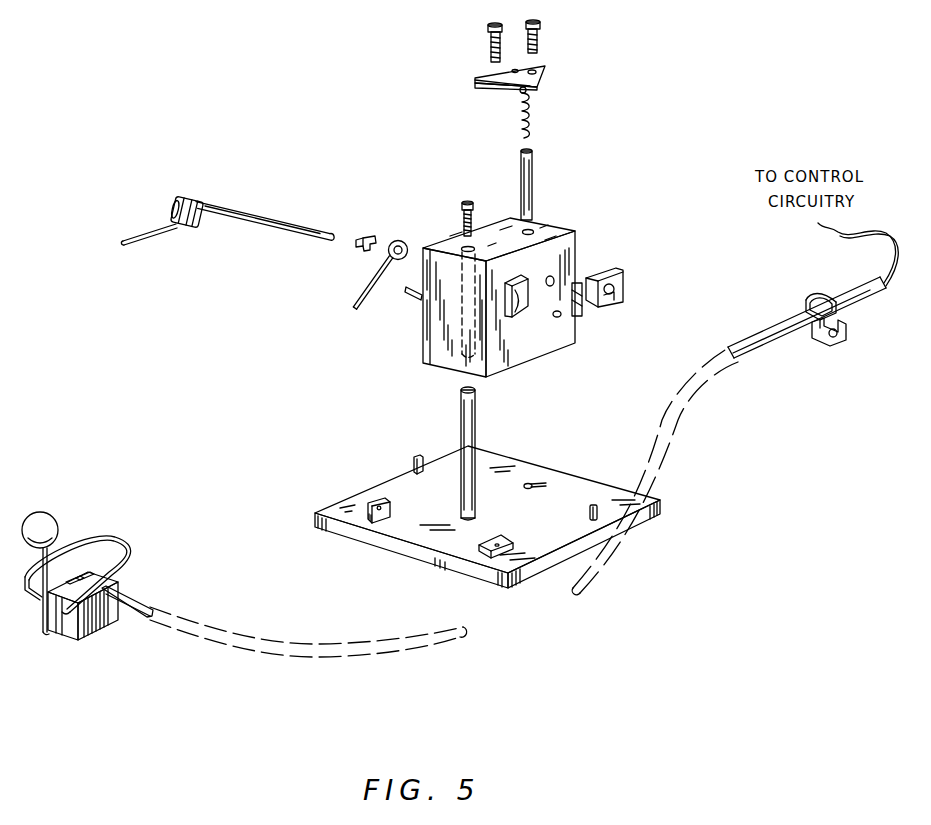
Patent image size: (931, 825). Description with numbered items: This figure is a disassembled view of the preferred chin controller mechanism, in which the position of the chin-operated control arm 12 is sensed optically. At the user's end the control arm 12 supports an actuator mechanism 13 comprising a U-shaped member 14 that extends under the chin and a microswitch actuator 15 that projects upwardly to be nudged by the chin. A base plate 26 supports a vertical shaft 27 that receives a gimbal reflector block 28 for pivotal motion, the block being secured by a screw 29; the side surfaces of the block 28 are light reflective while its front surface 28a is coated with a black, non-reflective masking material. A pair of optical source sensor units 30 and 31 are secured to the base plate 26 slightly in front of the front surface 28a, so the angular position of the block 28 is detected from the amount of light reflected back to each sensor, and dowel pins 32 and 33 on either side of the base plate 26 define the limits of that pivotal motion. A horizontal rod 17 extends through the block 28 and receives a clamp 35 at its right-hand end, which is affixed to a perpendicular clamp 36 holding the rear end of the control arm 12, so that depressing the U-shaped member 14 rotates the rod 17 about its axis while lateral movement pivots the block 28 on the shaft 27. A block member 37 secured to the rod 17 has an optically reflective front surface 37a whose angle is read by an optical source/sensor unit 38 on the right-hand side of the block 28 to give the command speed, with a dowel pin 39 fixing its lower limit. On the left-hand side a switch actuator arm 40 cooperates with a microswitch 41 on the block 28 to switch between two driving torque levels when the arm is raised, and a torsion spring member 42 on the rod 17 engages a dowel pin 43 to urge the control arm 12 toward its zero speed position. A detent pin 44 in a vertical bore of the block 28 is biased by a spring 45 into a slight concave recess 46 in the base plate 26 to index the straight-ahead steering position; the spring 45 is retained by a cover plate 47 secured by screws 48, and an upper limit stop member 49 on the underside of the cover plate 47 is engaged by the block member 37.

The control arm 12 is at (244, 636).
The actuator mechanism 13 is at (84, 661).
The U-shaped member 14 is at (130, 548).
The microswitch actuator 15 is at (39, 514).
The rod 17 is at (241, 217).
The base plate 26 is at (592, 481).
The vertical shaft 27 is at (477, 414).
The gimbal reflector block 28 is at (546, 231).
The front surface 28a is at (432, 348).
The screw 29 is at (465, 203).
The optical source sensor unit 30 is at (391, 510).
The optical source sensor unit 31 is at (484, 541).
The dowel pin 32 is at (413, 457).
The dowel pin 33 is at (589, 513).
The clamp 35 is at (851, 318).
The clamp 36 is at (823, 292).
The block member 37 is at (622, 276).
The front surface 37a is at (581, 316).
The optical source/sensor unit 38 is at (519, 281).
The dowel pin 39 is at (554, 318).
The switch actuator arm 40 is at (368, 281).
The microswitch 41 is at (363, 237).
The torsion spring member 42 is at (150, 236).
The dowel pin 43 is at (408, 293).
The detent pin 44 is at (534, 161).
The spring 45 is at (531, 113).
The concave recess 46 is at (548, 493).
The cover plate 47 is at (546, 69).
The screws 48 is at (487, 32).
The upper limit stop member 49 is at (520, 92).